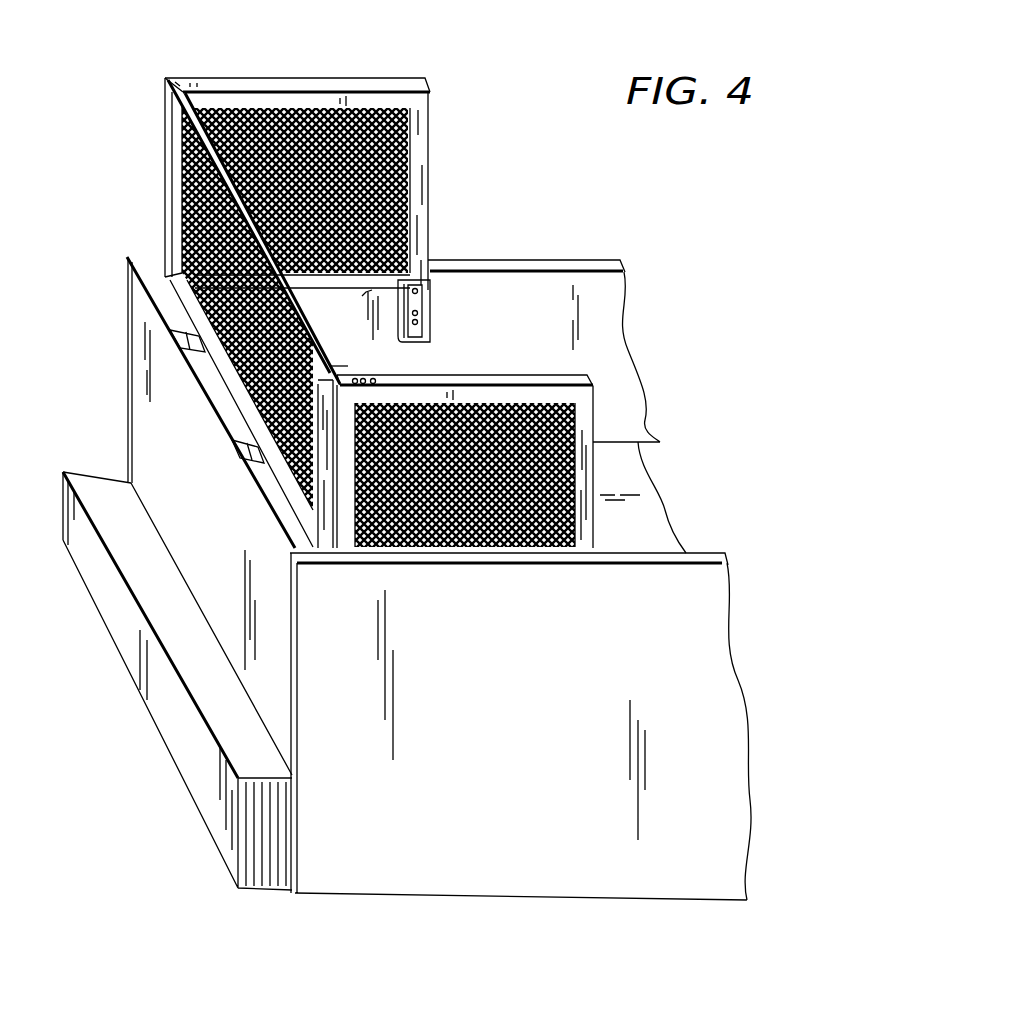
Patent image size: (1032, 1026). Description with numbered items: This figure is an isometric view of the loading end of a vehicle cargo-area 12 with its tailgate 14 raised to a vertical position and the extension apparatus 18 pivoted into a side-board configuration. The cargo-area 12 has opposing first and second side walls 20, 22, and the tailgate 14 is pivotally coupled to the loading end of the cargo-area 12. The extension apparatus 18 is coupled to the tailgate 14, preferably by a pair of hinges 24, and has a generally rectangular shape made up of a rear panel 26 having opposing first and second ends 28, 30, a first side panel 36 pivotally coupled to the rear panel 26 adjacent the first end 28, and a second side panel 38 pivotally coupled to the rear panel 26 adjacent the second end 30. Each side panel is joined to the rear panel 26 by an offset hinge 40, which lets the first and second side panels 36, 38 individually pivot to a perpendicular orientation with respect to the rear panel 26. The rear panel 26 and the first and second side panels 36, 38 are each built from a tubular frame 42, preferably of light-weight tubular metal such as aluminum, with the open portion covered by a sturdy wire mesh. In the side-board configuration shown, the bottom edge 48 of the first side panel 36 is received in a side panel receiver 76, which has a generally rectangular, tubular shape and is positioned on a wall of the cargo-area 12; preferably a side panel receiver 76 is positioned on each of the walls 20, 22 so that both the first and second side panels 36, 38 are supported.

The cargo-area 12 is at (604, 193).
The tailgate 14 is at (230, 551).
The extension apparatus 18 is at (198, 353).
The first side wall 20 is at (535, 262).
The second side wall 22 is at (721, 548).
The hinges 24 is at (176, 338).
The rear panel 26 is at (338, 372).
The first end 28 is at (162, 148).
The second end 30 is at (320, 548).
The first side panel 36 is at (430, 130).
The second side panel 38 is at (593, 403).
The offset hinge 40 is at (183, 78).
The tubular frame 42 is at (300, 86).
The bottom edge 48 is at (366, 292).
The side panel receiver 76 is at (436, 312).